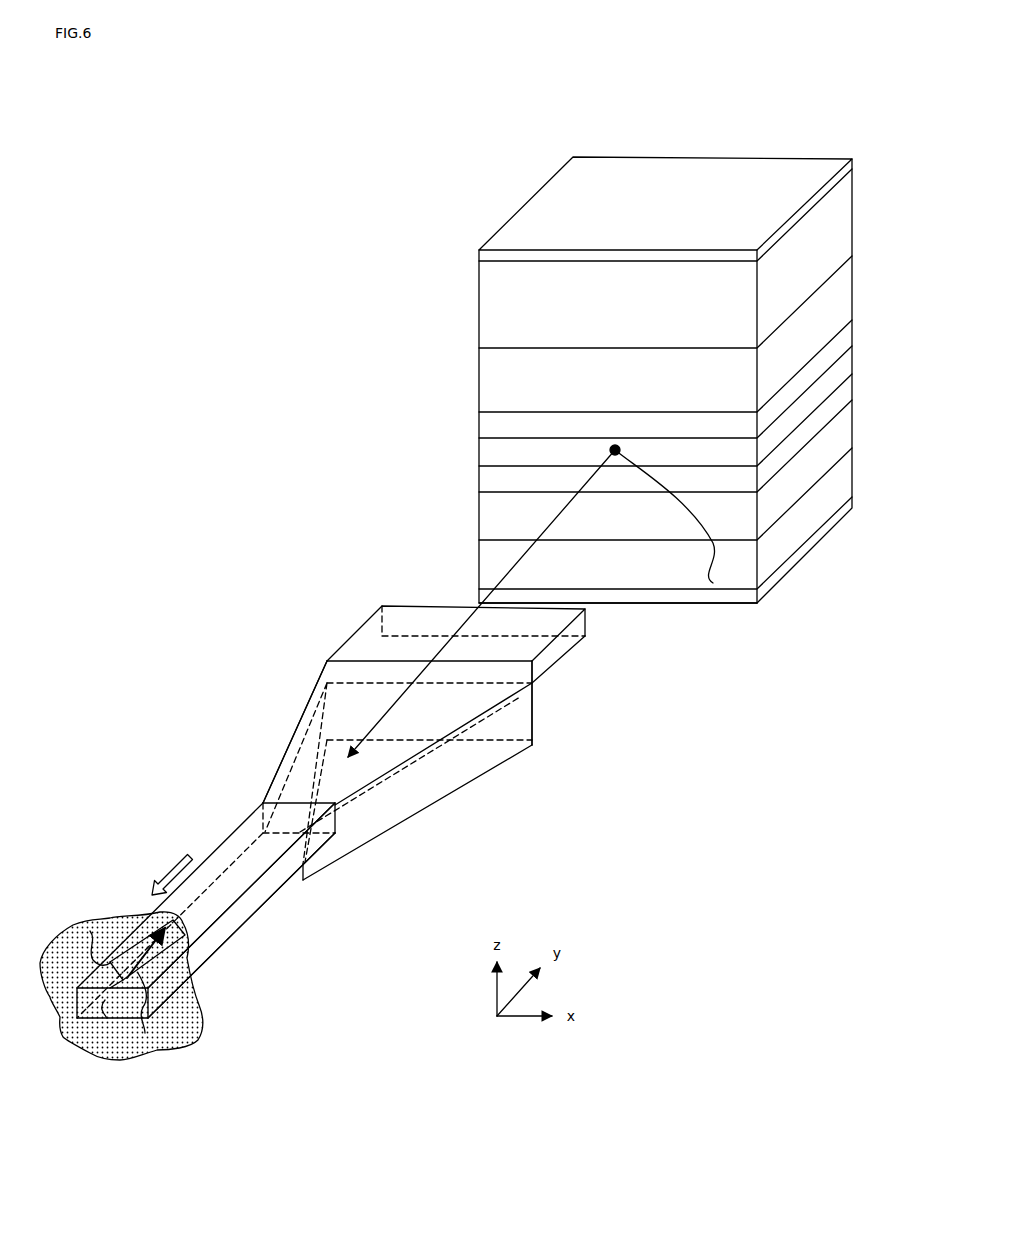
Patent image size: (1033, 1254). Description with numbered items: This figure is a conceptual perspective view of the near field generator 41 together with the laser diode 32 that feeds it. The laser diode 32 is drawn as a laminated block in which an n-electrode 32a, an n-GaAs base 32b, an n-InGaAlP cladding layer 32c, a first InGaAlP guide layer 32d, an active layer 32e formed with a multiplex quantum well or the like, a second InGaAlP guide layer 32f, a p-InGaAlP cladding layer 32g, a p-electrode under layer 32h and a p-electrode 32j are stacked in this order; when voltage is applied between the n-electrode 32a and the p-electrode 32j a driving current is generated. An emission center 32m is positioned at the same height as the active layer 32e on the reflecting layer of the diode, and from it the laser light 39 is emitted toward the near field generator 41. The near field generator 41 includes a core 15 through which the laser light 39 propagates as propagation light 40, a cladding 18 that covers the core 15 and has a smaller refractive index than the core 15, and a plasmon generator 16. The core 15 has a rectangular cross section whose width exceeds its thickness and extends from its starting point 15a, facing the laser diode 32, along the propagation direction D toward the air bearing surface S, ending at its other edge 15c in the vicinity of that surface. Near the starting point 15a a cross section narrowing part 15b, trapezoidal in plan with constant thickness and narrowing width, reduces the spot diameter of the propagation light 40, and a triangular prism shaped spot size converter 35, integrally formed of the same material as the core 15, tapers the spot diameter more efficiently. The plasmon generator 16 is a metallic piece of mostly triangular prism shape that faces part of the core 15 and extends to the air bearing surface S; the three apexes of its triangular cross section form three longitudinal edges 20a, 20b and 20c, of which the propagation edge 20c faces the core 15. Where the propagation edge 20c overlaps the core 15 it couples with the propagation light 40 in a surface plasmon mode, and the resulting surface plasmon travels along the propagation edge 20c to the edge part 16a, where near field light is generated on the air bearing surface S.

The laser diode 32 is at (667, 140).
The n-electrode 32a is at (479, 260).
The n-GaAs base 32b is at (479, 304).
The n-InGaAlP cladding layer 32c is at (479, 383).
The first InGaAlP guide layer 32d is at (479, 428).
The active layer 32e is at (479, 456).
The second InGaAlP guide layer 32f is at (479, 480).
The p-InGaAlP cladding layer 32g is at (479, 513).
The p-electrode under layer 32h is at (479, 560).
The p-electrode 32j is at (479, 596).
The emission center 32m is at (713, 583).
The laser light 39 is at (550, 525).
The near field generator 41 is at (318, 643).
The starting point 15a is at (375, 623).
The cross section narrowing part 15b is at (305, 727).
The cladding 18 is at (226, 774).
The propagation light 40 is at (533, 747).
The spot size converter 35 is at (470, 772).
The core 15 is at (388, 782).
The other edge 15c is at (177, 977).
The edge 20b is at (230, 940).
The air bearing surface S is at (50, 993).
The plasmon generator 16 is at (137, 947).
The edge 20a is at (90, 931).
The propagation edge 20c is at (145, 1033).
The edge part 16a is at (107, 1018).
The propagation direction D is at (172, 875).